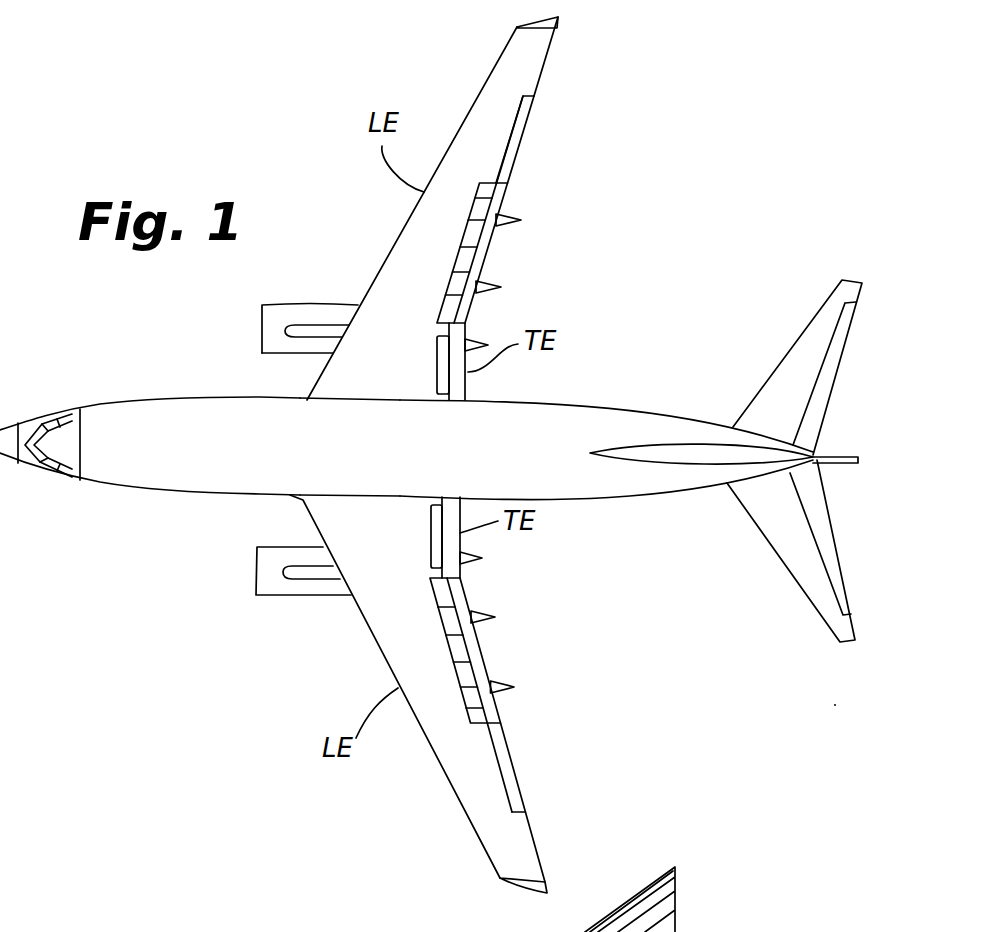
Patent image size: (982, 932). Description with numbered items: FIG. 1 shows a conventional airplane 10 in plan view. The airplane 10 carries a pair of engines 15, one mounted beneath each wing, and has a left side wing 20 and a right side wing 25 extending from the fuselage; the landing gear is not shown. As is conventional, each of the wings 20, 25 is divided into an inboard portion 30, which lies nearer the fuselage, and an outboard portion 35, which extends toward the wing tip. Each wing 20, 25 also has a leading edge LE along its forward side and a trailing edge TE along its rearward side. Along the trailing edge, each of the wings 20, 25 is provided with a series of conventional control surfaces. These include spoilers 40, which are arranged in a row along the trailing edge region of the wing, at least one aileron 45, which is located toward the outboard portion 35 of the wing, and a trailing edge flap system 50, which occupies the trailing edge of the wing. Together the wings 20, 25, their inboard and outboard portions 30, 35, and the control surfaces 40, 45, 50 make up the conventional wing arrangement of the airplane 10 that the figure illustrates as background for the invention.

The airplane 10 is at (124, 551).
The engines 15 is at (262, 352).
The left side wing 20 is at (430, 651).
The right side wing 25 is at (440, 258).
The inboard portion 30 is at (393, 365).
The outboard portion 35 is at (556, 41).
The spoilers 40 is at (488, 200).
The aileron 45 is at (524, 128).
The trailing edge flap system 50 is at (506, 306).